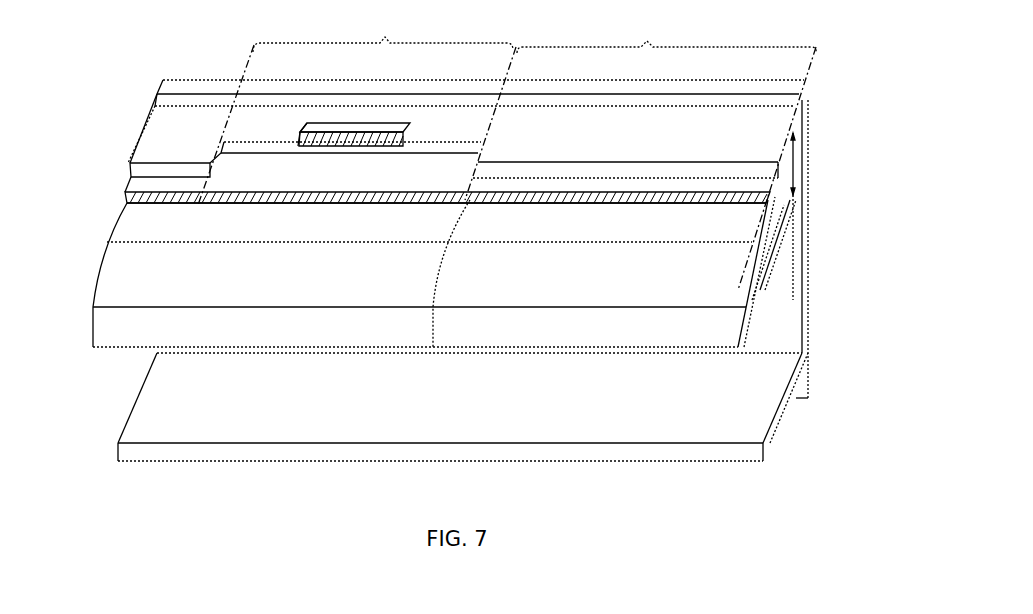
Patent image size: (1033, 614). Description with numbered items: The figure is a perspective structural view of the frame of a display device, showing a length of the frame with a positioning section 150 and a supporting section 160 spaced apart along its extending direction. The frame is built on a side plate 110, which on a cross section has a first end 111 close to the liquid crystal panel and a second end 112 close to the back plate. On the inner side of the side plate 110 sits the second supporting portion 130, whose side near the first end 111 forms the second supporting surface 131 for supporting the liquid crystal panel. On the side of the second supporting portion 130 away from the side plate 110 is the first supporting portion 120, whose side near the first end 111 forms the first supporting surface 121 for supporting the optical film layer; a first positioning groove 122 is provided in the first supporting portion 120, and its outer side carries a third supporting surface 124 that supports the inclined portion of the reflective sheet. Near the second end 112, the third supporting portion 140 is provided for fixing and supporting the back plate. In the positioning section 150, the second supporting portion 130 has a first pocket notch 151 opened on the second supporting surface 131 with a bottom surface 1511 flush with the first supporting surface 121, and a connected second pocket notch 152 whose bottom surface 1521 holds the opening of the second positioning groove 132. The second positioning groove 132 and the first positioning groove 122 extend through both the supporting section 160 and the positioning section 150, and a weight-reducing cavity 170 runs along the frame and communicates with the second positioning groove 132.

The side plate 110 is at (807, 281).
The first end 111 is at (787, 91).
The second end 112 is at (810, 391).
The first supporting portion 120 is at (757, 294).
The first supporting surface 121 is at (124, 228).
The first positioning groove 122 is at (771, 258).
The third supporting surface 124 is at (111, 288).
The second supporting portion 130 is at (793, 186).
The second supporting surface 131 is at (187, 113).
The second positioning groove 132 is at (362, 138).
The third supporting portion 140 is at (773, 445).
The positioning section 150 is at (383, 32).
The first pocket notch 151 is at (236, 152).
The bottom surface of the first pocket notch 1511 is at (420, 165).
The second pocket notch 152 is at (316, 124).
The bottom surface of the second pocket notch 1521 is at (333, 132).
The supporting section 160 is at (666, 151).
The weight-reducing cavity 170 is at (784, 208).